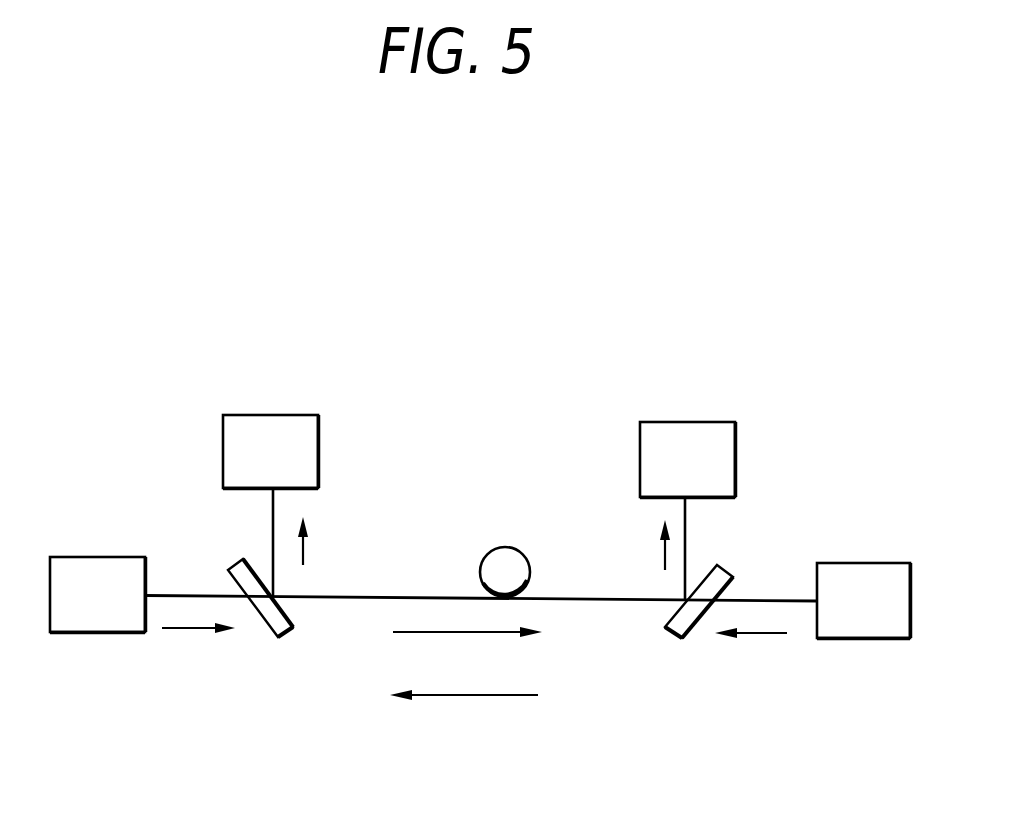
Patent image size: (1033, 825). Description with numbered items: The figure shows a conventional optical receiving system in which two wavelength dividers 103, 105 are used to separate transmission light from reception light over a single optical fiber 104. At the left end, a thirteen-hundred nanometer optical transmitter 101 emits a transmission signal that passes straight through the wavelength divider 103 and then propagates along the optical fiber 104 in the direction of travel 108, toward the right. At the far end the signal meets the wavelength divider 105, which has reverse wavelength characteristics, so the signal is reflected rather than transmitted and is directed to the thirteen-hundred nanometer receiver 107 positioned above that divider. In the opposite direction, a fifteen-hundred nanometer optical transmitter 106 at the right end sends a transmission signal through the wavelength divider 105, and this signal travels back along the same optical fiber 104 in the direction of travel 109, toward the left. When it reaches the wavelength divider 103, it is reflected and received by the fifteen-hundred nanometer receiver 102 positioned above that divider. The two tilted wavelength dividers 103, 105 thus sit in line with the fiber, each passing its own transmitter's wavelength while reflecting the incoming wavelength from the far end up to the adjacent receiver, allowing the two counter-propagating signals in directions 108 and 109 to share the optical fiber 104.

The 1300 nm optical transmitter 101 is at (93, 633).
The 1500 nm receiver 102 is at (278, 415).
The wavelength divider 103 is at (257, 619).
The optical fiber 104 is at (405, 597).
The wavelength divider 105 is at (673, 640).
The 1500 nm optical transmitter 106 is at (867, 639).
The 1300 nm receiver 107 is at (688, 422).
The direction of travel 108 is at (395, 632).
The direction of travel 109 is at (467, 696).